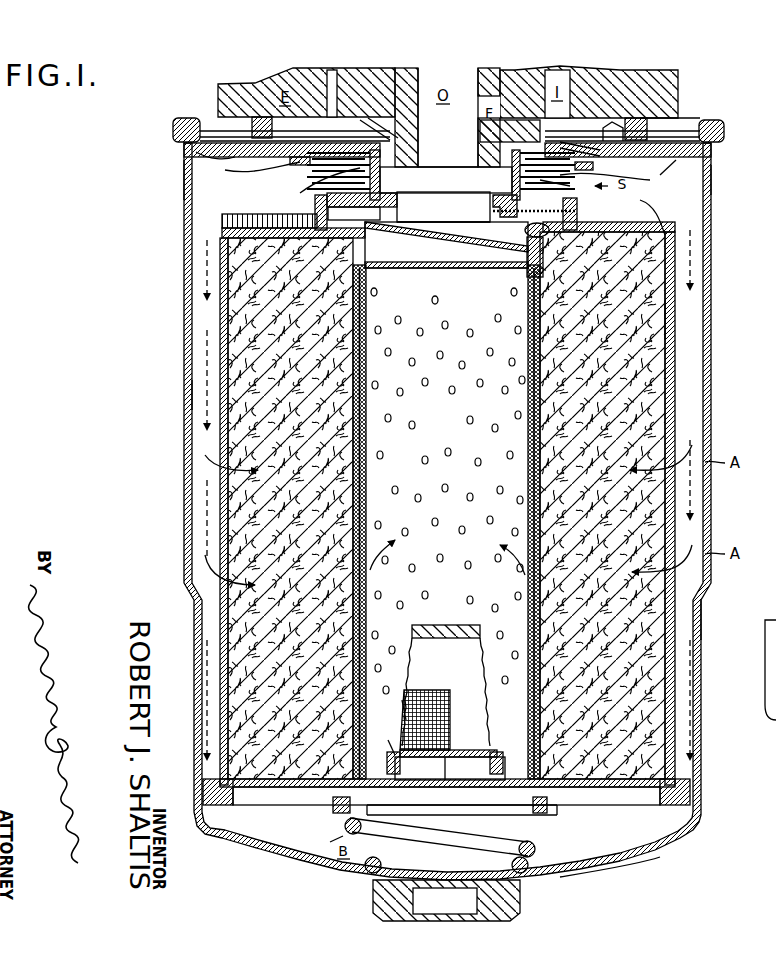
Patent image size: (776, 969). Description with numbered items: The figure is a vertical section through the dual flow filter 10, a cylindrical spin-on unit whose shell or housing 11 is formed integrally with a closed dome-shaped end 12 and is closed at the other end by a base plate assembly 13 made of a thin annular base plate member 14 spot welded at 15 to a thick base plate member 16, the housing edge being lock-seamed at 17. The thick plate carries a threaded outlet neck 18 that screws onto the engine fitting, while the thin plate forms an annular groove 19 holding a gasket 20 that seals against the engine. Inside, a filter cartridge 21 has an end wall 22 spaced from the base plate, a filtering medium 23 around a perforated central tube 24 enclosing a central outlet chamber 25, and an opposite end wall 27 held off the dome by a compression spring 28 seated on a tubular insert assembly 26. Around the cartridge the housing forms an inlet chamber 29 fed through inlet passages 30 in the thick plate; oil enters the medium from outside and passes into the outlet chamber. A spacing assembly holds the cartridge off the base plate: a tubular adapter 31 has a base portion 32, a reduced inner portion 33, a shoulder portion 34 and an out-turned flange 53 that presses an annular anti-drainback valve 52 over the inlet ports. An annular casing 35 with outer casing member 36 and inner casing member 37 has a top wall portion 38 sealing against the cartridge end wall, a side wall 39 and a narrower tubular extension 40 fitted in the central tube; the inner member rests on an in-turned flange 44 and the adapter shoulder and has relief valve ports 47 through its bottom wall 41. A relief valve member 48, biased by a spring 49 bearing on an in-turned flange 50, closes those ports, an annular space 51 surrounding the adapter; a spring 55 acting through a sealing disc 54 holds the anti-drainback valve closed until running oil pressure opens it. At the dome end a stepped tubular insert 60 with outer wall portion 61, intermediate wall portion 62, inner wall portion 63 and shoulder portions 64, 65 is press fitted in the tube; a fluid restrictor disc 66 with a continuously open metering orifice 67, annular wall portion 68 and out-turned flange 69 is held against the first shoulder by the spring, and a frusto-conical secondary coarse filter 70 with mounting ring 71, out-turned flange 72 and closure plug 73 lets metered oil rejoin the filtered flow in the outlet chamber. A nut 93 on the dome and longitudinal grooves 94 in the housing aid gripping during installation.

The dual flow filter 10 is at (714, 438).
The spin-on shell or housing 11 is at (186, 394).
The closed dome-shaped end 12 is at (615, 869).
The base plate assembly 13 is at (676, 165).
The annular base plate member 14 is at (718, 122).
The spot welding 15 is at (238, 158).
The base plate member 16 is at (186, 170).
The lock seam 17 is at (173, 128).
The outlet neck 18 is at (447, 117).
The annular groove 19 is at (618, 123).
The annular gasket 20 is at (672, 116).
The filter cartridge 21 is at (676, 320).
The end wall 22 is at (670, 240).
The filtering medium 23 is at (633, 382).
The perforated central tube 24 is at (366, 438).
The central outlet chamber 25 is at (436, 419).
The tubular insert assembly 26 is at (336, 836).
The end wall 27 is at (660, 796).
The compression spring 28 is at (536, 849).
The inlet chamber 29 is at (712, 176).
The inlet passages 30 is at (575, 135).
The tubular adapter 31 is at (405, 216).
The base portion 32 is at (508, 178).
The reduced inner portion 33 is at (527, 231).
The intermediate shoulder portion 34 is at (493, 202).
The annular casing 35 is at (304, 208).
The outer casing member 36 is at (578, 210).
The inner casing member 37 is at (580, 212).
The top wall portion 38 is at (543, 266).
The casing side wall 39 is at (582, 227).
The tubular extension 40 is at (376, 270).
The bottom wall 41 is at (390, 196).
The in-turned flange 44 is at (316, 204).
The relief valve ports 47 is at (555, 186).
The relief valve member 48 is at (375, 236).
The compression spring 49 is at (440, 268).
The in-turned flange 50 is at (520, 270).
The annular space 51 is at (443, 216).
The anti-drainback valve 52 is at (272, 128).
The out-turned flange 53 is at (364, 140).
The annular sealing disc 54 is at (292, 161).
The compression spring 55 is at (594, 167).
The tubular insert 60 is at (552, 800).
The outer annular wall portion 61 is at (340, 810).
The intermediate annular wall portion 62 is at (385, 762).
The inner annular wall portion 63 is at (396, 746).
The first shoulder portion 64 is at (235, 800).
The second shoulder portion 65 is at (496, 752).
The fluid restrictor disc 66 is at (458, 768).
The metering orifice 67 is at (466, 812).
The annular wall portion 68 is at (450, 765).
The out-turned radial flange 69 is at (358, 832).
The secondary coarse filter 70 is at (489, 702).
The mounting ring 71 is at (402, 702).
The out-turned flange 72 is at (430, 742).
The closure plug 73 is at (450, 625).
The nut 93 is at (520, 897).
The longitudinal grooves 94 is at (705, 612).